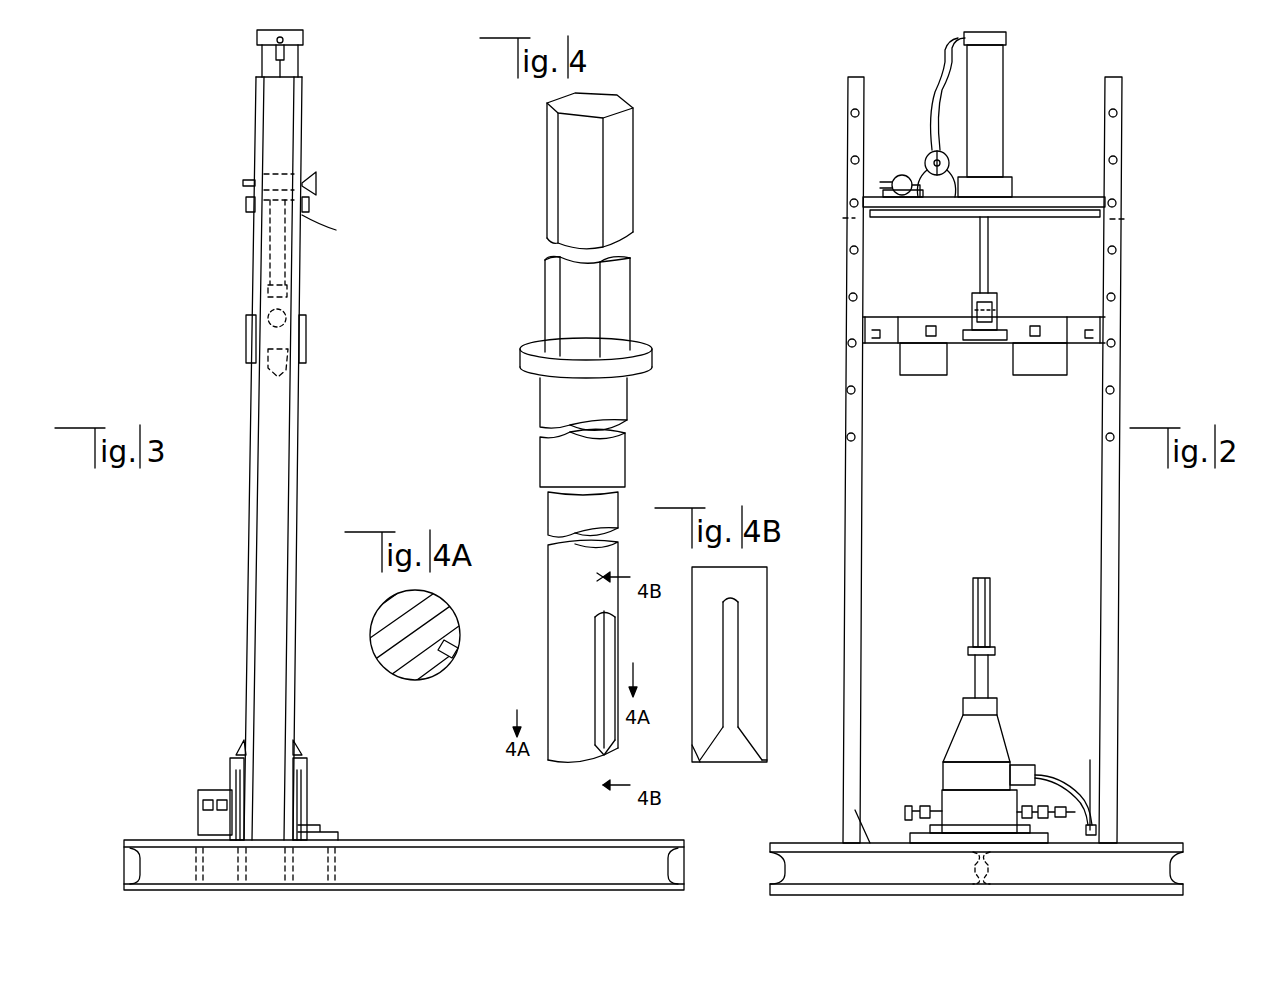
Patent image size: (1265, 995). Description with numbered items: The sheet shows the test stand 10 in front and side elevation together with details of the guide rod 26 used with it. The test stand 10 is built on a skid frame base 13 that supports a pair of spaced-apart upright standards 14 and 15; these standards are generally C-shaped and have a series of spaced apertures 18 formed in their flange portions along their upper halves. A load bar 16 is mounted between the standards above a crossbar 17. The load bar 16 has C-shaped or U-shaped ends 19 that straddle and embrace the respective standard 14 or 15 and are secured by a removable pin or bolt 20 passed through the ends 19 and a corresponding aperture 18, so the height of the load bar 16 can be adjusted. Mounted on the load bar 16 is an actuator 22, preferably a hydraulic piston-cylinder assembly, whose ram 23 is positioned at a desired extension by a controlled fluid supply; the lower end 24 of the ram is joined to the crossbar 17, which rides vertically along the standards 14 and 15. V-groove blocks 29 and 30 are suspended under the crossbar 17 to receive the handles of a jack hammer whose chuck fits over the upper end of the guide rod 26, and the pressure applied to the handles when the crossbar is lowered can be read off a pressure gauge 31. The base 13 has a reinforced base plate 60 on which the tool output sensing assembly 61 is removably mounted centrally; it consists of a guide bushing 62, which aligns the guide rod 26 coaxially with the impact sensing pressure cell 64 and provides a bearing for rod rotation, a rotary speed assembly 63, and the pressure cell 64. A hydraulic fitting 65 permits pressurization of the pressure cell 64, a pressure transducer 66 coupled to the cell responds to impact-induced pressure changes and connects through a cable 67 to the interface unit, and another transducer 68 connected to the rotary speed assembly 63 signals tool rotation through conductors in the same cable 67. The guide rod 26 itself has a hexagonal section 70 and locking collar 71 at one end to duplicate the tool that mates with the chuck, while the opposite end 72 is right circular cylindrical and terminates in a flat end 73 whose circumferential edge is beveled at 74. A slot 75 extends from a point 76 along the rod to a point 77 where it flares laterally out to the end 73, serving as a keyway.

In FIG. 3, the test stand 10 is at (330, 425).
In FIG. 2, the test stand 10 is at (826, 358).
In FIG. 3, the skid frame base 13 is at (432, 866).
In FIG. 2, the skid frame base 13 is at (772, 856).
In FIG. 3, the upright standard 14 is at (288, 495).
In FIG. 2, the upright standard 14 is at (862, 530).
In FIG. 2, the upright standard 15 is at (1118, 583).
In FIG. 2, the load bar 16 is at (1060, 197).
In FIG. 2, the crossbar 17 is at (1052, 317).
In FIG. 2, the apertures 18 is at (850, 160).
In FIG. 3, the ends of load bar 19 is at (334, 227).
In FIG. 2, the ends of load bar 19 is at (840, 227).
In FIG. 3, the pin 20 is at (310, 205).
In FIG. 2, the pin 20 is at (850, 203).
In FIG. 3, the actuator 22 is at (302, 61).
In FIG. 2, the actuator 22 is at (1000, 108).
In FIG. 3, the ram 23 is at (286, 270).
In FIG. 2, the ram 23 is at (988, 250).
In FIG. 2, the lower end of ram 24 is at (968, 302).
In FIG. 2, the guide rod 26 is at (990, 578).
In FIG. 3, the V-groove block 29 is at (268, 375).
In FIG. 2, the V-groove block 29 is at (922, 370).
In FIG. 2, the V-groove block 30 is at (1045, 370).
In FIG. 2, the pressure gauge 31 is at (922, 165).
In FIG. 3, the base plate 60 is at (458, 846).
In FIG. 2, the base plate 60 is at (1160, 843).
In FIG. 3, the tool output sensing assembly 61 is at (182, 780).
In FIG. 2, the tool output sensing assembly 61 is at (940, 725).
In FIG. 3, the guide bushing 62 is at (238, 742).
In FIG. 2, the guide bushing 62 is at (1000, 730).
In FIG. 3, the rotary speed assembly 63 is at (304, 768).
In FIG. 2, the rotary speed assembly 63 is at (940, 772).
In FIG. 3, the impact sensing pressure cell 64 is at (305, 800).
In FIG. 2, the impact sensing pressure cell 64 is at (992, 820).
In FIG. 2, the hydraulic fitting 65 is at (915, 810).
In FIG. 2, the pressure transducer 66 is at (1052, 806).
In FIG. 2, the cable 67 is at (1095, 800).
In FIG. 2, the transducer 68 is at (1022, 766).
In FIG. 4, the hexagonal section 70 is at (620, 190).
In FIG. 4, the locking collar 71 is at (652, 358).
In FIG. 4, the opposite end of guide rod 72 is at (548, 515).
In FIG. 4A, the opposite end of guide rod 72 is at (440, 600).
In FIG. 4B, the opposite end of guide rod 72 is at (767, 627).
In FIG. 4, the flat end 73 is at (568, 765).
In FIG. 4B, the flat end 73 is at (745, 765).
In FIG. 4B, the bevel 74 is at (695, 765).
In FIG. 4, the slot 75 is at (604, 650).
In FIG. 4A, the slot 75 is at (445, 660).
In FIG. 4B, the slot 75 is at (735, 665).
In FIG. 4, the point 76 is at (615, 620).
In FIG. 4B, the point 76 is at (738, 600).
In FIG. 4, the point 77 is at (612, 752).
In FIG. 4B, the point 77 is at (745, 740).